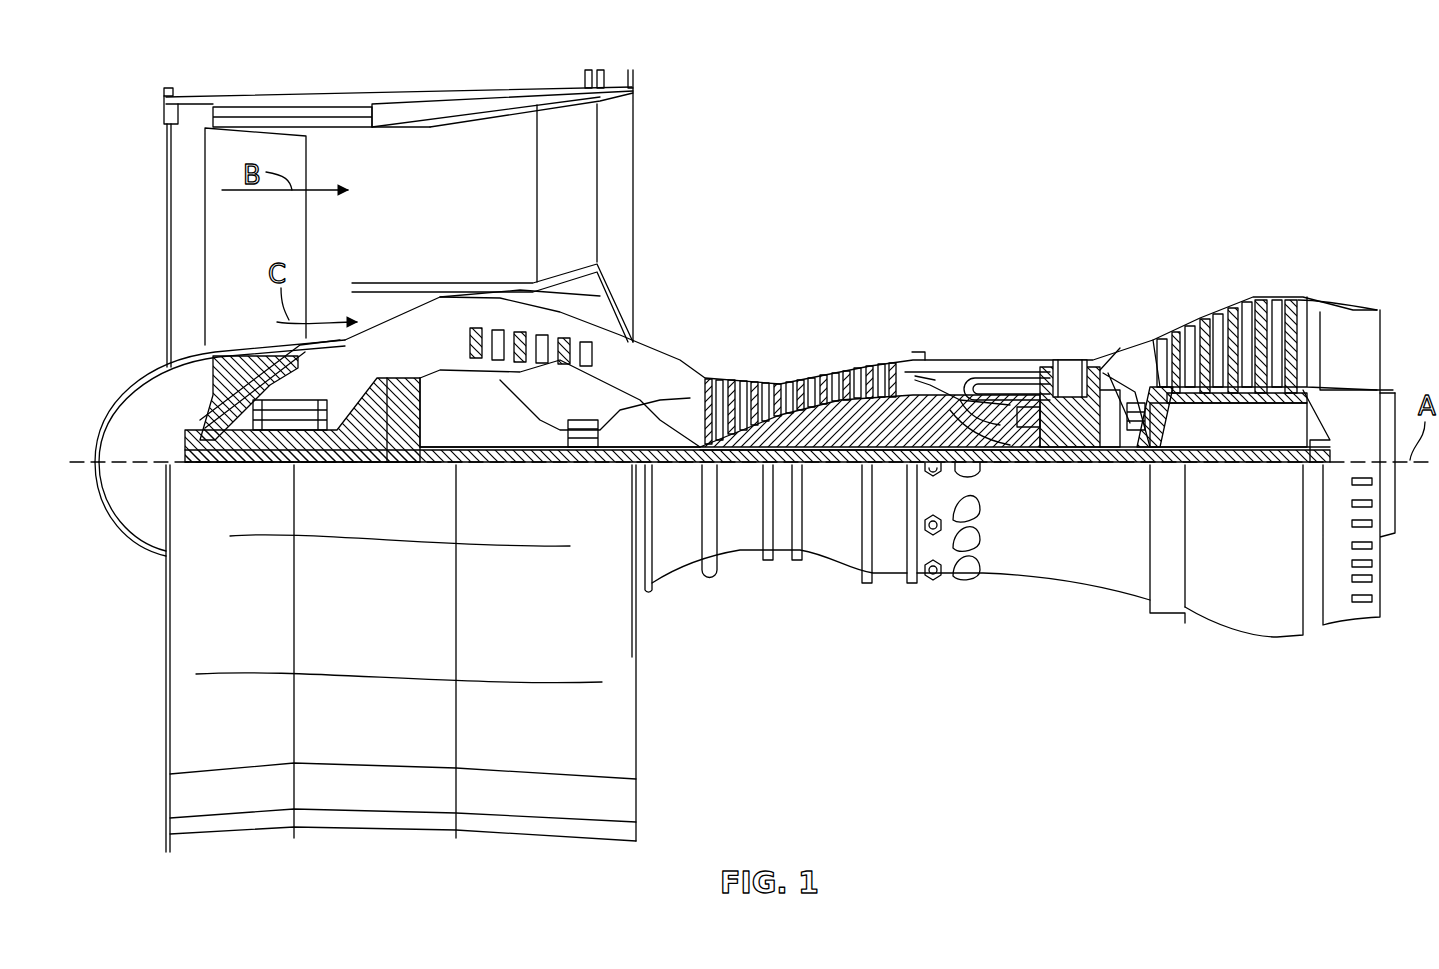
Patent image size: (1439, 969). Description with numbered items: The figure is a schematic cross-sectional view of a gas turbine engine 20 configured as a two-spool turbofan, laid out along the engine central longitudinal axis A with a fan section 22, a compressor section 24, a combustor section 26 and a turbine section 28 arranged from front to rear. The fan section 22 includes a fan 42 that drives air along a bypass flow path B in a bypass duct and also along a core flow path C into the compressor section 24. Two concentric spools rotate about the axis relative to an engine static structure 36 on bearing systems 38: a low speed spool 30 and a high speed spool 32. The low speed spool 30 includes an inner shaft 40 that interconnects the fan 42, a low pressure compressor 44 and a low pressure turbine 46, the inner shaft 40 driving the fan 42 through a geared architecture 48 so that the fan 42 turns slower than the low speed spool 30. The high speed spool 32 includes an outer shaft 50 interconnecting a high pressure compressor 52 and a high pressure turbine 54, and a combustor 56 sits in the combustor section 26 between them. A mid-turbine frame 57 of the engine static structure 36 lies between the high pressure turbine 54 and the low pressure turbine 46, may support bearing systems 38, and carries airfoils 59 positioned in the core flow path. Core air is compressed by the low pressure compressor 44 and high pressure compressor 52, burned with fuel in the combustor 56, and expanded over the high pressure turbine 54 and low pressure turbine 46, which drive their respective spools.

The gas turbine engine 20 is at (1203, 132).
The fan section 22 is at (263, 66).
The compressor section 24 is at (688, 358).
The combustor section 26 is at (975, 312).
The turbine section 28 is at (1098, 313).
The low speed spool 30 is at (857, 465).
The high speed spool 32 is at (912, 418).
The engine static structure 36 is at (893, 580).
The bearing systems 38 is at (575, 440).
The inner shaft 40 is at (648, 460).
The fan 42 is at (401, 490).
The low pressure compressor 44 is at (546, 332).
The low pressure turbine 46 is at (1236, 326).
The geared architecture 48 is at (402, 432).
The outer shaft 50 is at (1015, 447).
The high pressure compressor 52 is at (808, 378).
The high pressure turbine 54 is at (1069, 360).
The combustor 56 is at (397, 104).
The mid-turbine frame 57 is at (1120, 350).
The airfoils 59 is at (1178, 405).